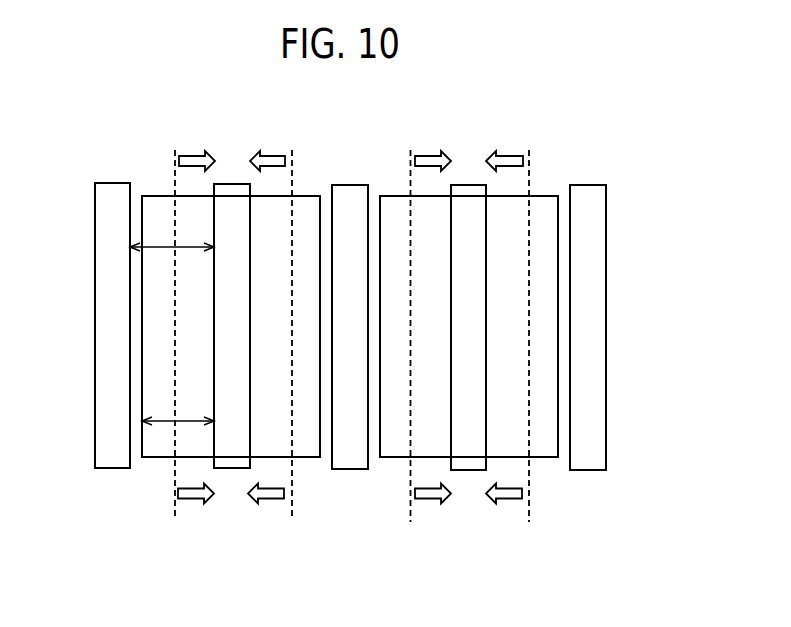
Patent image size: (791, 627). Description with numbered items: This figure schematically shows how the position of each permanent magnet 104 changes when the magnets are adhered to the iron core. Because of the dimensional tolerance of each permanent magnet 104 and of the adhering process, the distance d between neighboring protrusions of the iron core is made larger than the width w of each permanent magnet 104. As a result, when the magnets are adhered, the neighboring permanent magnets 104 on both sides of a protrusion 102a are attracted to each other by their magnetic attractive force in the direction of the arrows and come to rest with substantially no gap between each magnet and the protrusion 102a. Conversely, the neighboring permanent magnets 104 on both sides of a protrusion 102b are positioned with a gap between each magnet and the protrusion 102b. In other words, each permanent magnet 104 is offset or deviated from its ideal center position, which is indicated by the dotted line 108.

The permanent magnet 104 is at (303, 210).
The protrusion 102a is at (467, 447).
The protrusion 102b is at (350, 453).
The dotted line 108 is at (292, 520).
The distance d is at (163, 247).
The width w is at (168, 421).